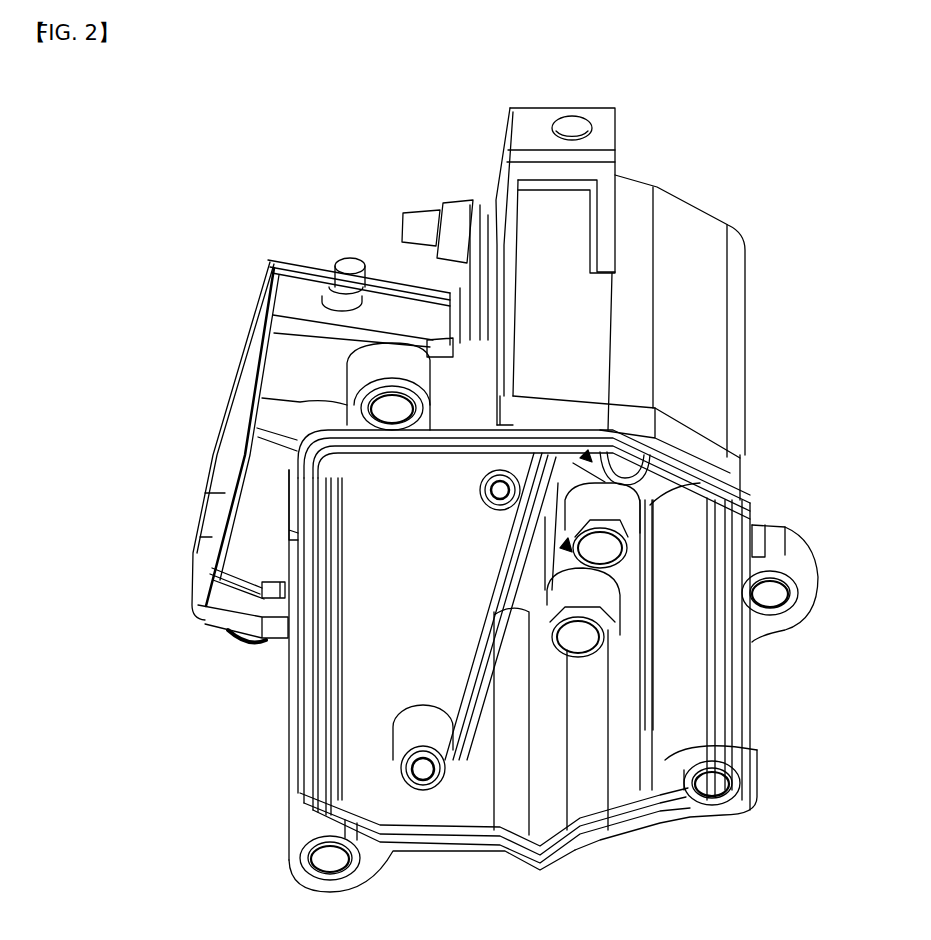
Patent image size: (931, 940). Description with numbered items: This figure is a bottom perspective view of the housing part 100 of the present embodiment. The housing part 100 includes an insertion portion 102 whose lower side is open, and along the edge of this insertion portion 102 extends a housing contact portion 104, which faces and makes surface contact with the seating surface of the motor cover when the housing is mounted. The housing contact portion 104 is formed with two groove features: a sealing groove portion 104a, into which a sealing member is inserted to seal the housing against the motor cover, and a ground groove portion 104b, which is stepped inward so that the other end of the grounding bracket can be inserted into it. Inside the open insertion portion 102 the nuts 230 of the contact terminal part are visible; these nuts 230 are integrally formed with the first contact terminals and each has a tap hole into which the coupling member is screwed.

The housing part 100 is at (840, 150).
The insertion portion 102 is at (578, 712).
The housing contact portion 104 is at (750, 680).
The sealing groove portion 104a is at (750, 713).
The ground groove portion 104b is at (290, 662).
The nuts 230 is at (730, 483).